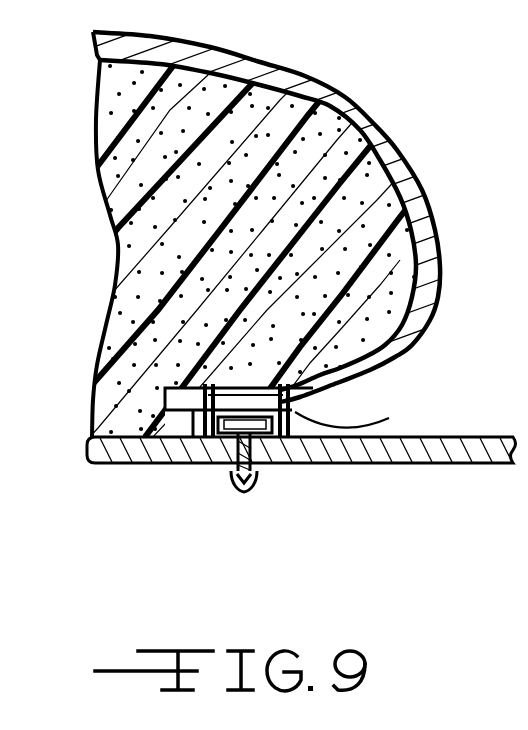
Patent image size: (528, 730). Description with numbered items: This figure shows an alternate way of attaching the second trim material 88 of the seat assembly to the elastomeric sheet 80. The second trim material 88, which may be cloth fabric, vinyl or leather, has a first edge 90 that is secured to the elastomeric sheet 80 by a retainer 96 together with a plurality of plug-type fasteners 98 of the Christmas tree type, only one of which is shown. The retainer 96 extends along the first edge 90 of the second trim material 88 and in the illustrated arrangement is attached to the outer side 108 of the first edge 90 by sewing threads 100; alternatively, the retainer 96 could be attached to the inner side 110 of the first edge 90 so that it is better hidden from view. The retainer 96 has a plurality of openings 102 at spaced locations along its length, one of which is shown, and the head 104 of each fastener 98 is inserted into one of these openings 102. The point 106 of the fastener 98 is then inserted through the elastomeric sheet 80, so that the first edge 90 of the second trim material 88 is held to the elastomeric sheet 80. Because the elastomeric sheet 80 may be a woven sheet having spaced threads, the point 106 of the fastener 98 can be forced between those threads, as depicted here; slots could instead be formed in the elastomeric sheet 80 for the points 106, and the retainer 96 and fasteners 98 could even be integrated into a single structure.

The elastomeric sheet 80 is at (417, 453).
The second trim material 88 is at (297, 83).
The first edge 90 is at (232, 408).
The retainer 96 is at (358, 419).
The plug-type fastener 98 is at (274, 436).
The sewing threads 100 is at (284, 388).
The opening 102 is at (265, 388).
The head 104 is at (208, 385).
The point 106 is at (242, 493).
The outer side 108 is at (215, 397).
The inner side 110 is at (187, 387).